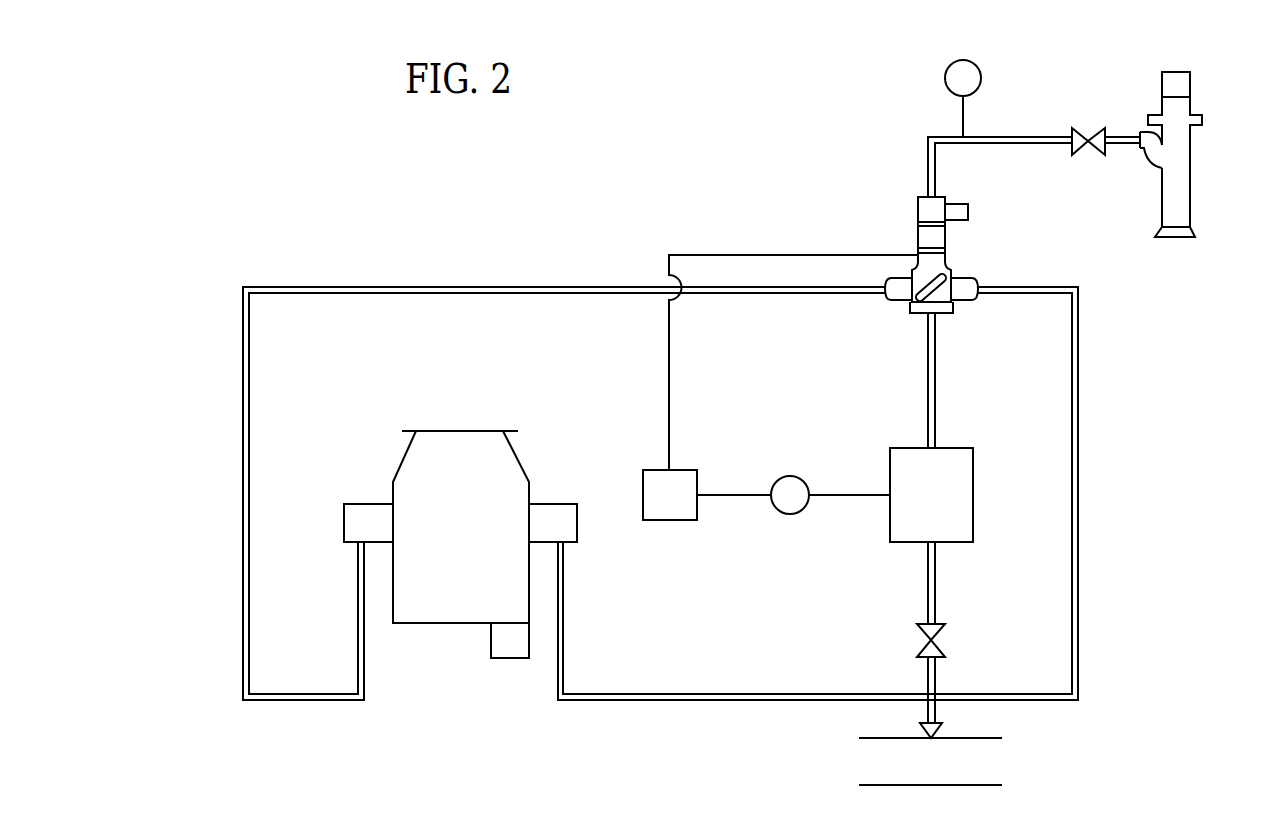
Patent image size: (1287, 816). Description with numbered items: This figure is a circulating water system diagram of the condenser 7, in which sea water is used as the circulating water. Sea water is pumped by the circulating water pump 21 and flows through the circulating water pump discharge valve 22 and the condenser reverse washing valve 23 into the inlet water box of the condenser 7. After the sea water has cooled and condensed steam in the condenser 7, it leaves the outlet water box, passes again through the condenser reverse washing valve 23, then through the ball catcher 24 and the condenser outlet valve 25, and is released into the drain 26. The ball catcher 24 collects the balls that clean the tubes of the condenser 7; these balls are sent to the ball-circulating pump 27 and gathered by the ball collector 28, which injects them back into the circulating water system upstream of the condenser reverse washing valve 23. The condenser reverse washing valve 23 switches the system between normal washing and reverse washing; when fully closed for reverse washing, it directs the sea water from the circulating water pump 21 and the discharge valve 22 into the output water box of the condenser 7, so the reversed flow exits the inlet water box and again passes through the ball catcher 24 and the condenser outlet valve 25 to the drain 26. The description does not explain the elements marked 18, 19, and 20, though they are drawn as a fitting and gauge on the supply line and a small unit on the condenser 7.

The condenser 7 is at (451, 535).
The pressure regulating valve 18 is at (968, 211).
The pressure gauge 19 is at (945, 78).
The heater 20 is at (497, 655).
The circulating water pump 21 is at (1190, 187).
The circulating water pump discharge valve 22 is at (1078, 128).
The condenser reverse washing valve 23 is at (950, 266).
The ball catcher 24 is at (974, 492).
The condenser outlet valve 25 is at (917, 637).
The drain 26 is at (913, 773).
The ball-circulating pump 27 is at (790, 476).
The ball collector 28 is at (670, 521).